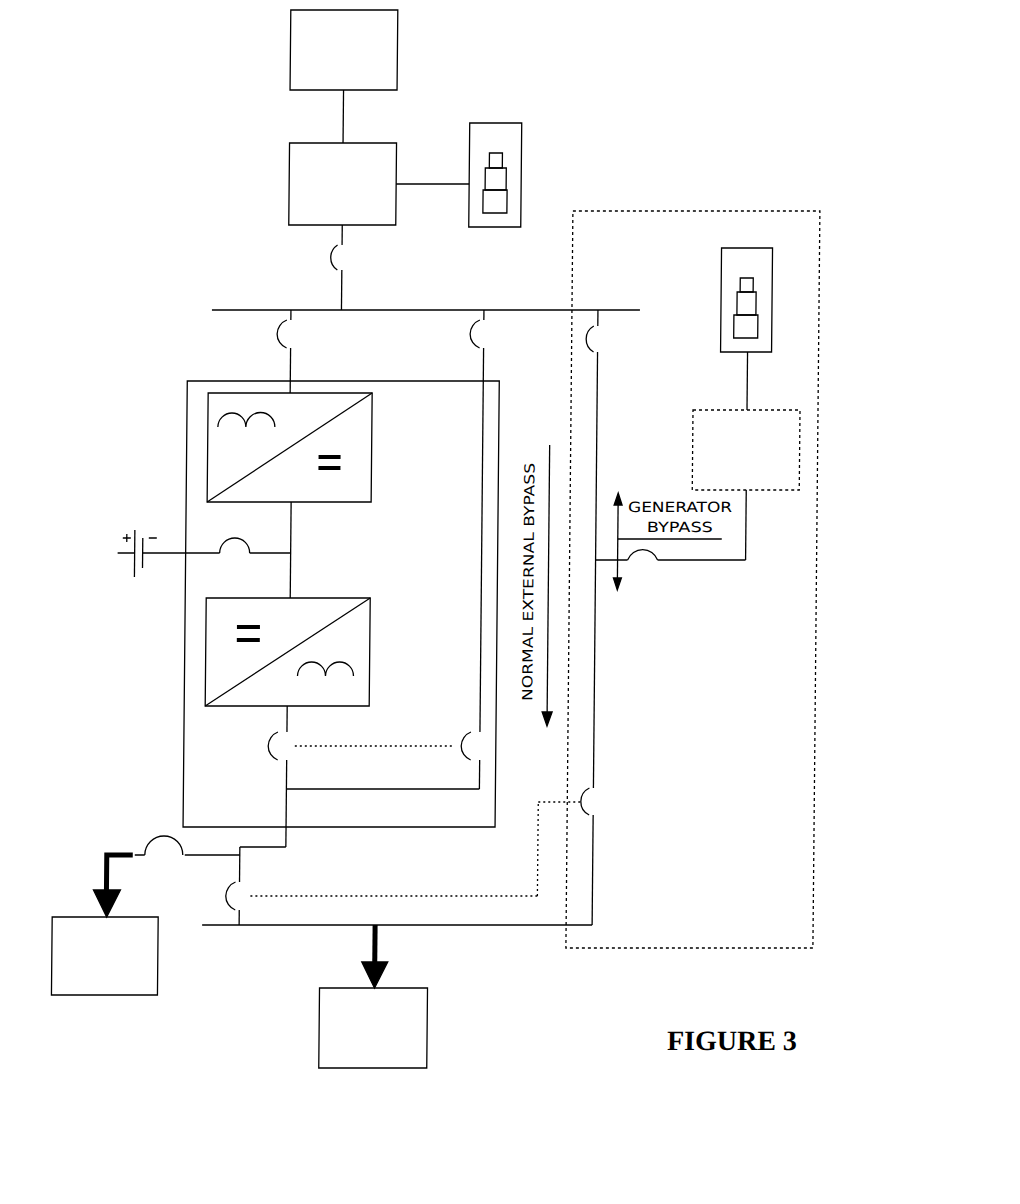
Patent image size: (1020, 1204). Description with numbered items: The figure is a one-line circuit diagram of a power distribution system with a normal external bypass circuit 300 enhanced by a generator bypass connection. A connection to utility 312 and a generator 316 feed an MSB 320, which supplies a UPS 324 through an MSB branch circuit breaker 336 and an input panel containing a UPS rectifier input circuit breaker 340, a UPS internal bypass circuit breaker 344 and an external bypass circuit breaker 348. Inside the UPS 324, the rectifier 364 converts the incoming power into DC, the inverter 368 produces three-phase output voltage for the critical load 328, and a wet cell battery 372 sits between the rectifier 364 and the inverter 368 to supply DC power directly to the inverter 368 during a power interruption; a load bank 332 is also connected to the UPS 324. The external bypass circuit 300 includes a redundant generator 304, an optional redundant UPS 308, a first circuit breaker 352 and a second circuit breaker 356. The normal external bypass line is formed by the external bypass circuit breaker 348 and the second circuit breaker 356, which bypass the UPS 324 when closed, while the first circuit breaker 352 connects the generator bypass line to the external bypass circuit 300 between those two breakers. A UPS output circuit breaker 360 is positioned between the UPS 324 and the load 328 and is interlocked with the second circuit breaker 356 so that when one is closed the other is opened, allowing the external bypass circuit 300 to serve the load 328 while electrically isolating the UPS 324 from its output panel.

The external bypass circuit 300 is at (690, 211).
The redundant generator 304 is at (758, 248).
The redundant UPS 308 is at (718, 410).
The utility 312 is at (395, 50).
The generator 316 is at (519, 123).
The MSB 320 is at (309, 142).
The UPS 324 is at (208, 381).
The load 328 is at (434, 1025).
The load bank 332 is at (112, 995).
The MSB branch circuit breaker 336 is at (329, 256).
The UPS rectifier input circuit breaker 340 is at (298, 335).
The UPS internal bypass circuit breaker 344 is at (471, 340).
The external bypass circuit breaker 348 is at (603, 335).
The first circuit breaker 352 is at (648, 568).
The second circuit breaker 356 is at (602, 800).
The UPS output circuit breaker 360 is at (252, 908).
The rectifier 364 is at (209, 447).
The inverter 368 is at (210, 650).
The wet cell battery 372 is at (120, 553).